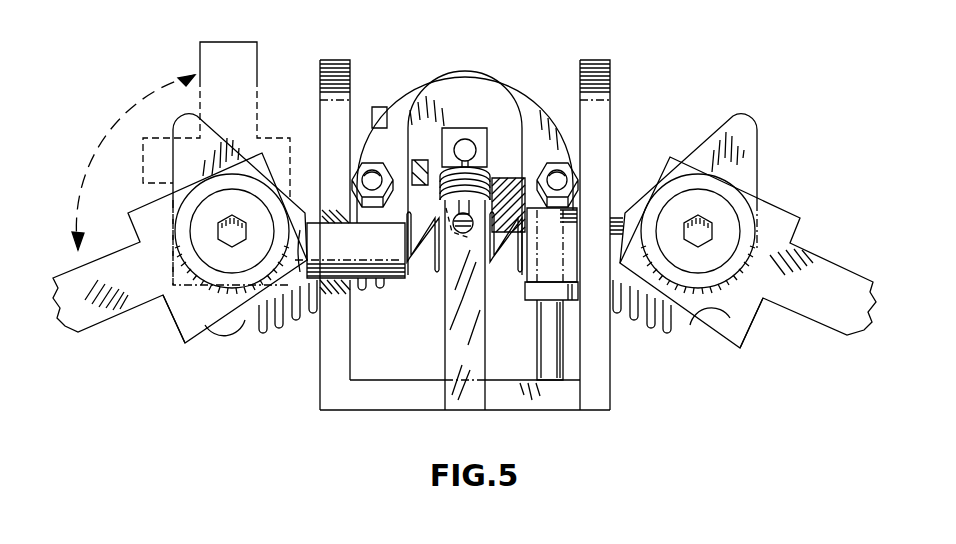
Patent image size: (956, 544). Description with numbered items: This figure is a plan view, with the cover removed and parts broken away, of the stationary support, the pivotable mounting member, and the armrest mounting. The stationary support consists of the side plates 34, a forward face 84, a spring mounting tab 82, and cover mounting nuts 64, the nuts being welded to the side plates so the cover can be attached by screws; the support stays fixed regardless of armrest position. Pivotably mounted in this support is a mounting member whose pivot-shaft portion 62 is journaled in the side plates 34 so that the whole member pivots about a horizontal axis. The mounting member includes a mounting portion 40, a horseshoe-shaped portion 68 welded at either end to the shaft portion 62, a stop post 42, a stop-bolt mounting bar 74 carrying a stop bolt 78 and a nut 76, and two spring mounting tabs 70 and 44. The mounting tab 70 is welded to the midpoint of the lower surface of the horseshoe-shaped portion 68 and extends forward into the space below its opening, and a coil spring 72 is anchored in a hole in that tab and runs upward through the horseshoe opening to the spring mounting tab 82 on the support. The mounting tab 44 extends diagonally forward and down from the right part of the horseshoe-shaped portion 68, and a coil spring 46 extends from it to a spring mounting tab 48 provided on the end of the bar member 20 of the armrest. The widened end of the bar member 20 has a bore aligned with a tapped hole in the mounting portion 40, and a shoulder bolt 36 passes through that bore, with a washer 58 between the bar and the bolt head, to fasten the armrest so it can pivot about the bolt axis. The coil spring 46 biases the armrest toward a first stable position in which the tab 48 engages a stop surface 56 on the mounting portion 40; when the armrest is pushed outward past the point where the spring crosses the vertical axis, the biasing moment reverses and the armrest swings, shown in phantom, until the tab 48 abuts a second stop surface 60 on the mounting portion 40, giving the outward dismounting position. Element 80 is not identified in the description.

The bar member 20 is at (199, 60).
The side plates 34 is at (322, 88).
The shoulder bolt 36 is at (196, 226).
The mounting portion 40 is at (222, 136).
The stop post 42 is at (379, 107).
The mounting tab 44 is at (510, 186).
The coil spring 46 is at (293, 325).
The spring mounting tab 48 is at (143, 179).
The stop surface 56 is at (224, 330).
The washer 58 is at (185, 249).
The second stop surface 60 is at (173, 134).
The pivot-shaft portion 62 is at (393, 270).
The cover mounting nuts 64 is at (385, 170).
The horseshoe-shaped portion 68 is at (419, 92).
The mounting tab 70 is at (484, 144).
The coil spring 72 is at (445, 200).
The stop-bolt mounting bar 74 is at (530, 270).
The nut 76 is at (531, 296).
The stop bolt 78 is at (563, 346).
The base portion 80 is at (505, 380).
The spring mounting tab 82 is at (452, 316).
The forward face 84 is at (396, 401).